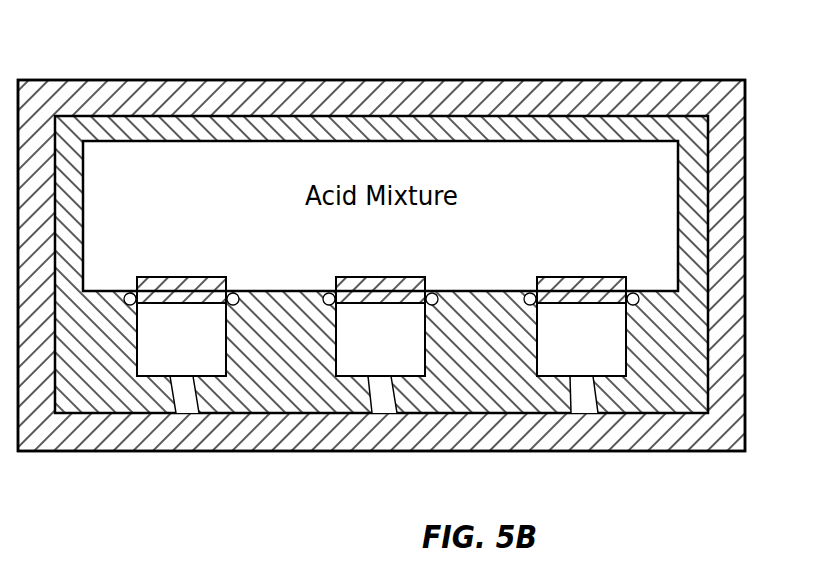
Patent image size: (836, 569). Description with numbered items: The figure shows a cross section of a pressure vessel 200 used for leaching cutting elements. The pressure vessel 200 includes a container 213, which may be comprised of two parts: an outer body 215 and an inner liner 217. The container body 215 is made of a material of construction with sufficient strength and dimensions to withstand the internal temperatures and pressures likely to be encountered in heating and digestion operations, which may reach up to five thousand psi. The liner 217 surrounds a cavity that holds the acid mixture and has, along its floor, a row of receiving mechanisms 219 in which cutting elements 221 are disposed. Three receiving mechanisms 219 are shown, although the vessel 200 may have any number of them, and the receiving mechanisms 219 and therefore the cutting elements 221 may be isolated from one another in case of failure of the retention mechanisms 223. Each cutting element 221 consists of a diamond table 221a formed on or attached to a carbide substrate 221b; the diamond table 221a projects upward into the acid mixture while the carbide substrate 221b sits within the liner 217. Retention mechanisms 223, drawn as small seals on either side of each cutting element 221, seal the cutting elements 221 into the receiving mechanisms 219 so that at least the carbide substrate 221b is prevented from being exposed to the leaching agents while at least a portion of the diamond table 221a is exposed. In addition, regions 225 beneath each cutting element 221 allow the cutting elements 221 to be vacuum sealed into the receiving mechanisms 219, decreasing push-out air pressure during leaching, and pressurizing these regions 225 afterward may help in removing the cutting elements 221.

The pressure vessel 200 is at (235, 43).
The container 213 is at (527, 68).
The body 215 is at (592, 88).
The liner 217 is at (182, 140).
The receiving mechanism 219 is at (137, 353).
The cutting element 221 is at (157, 367).
The diamond table 221a is at (190, 277).
The carbide substrate 221b is at (381, 339).
The retention mechanism 223 is at (640, 300).
The vacuum seal region 225 is at (180, 403).